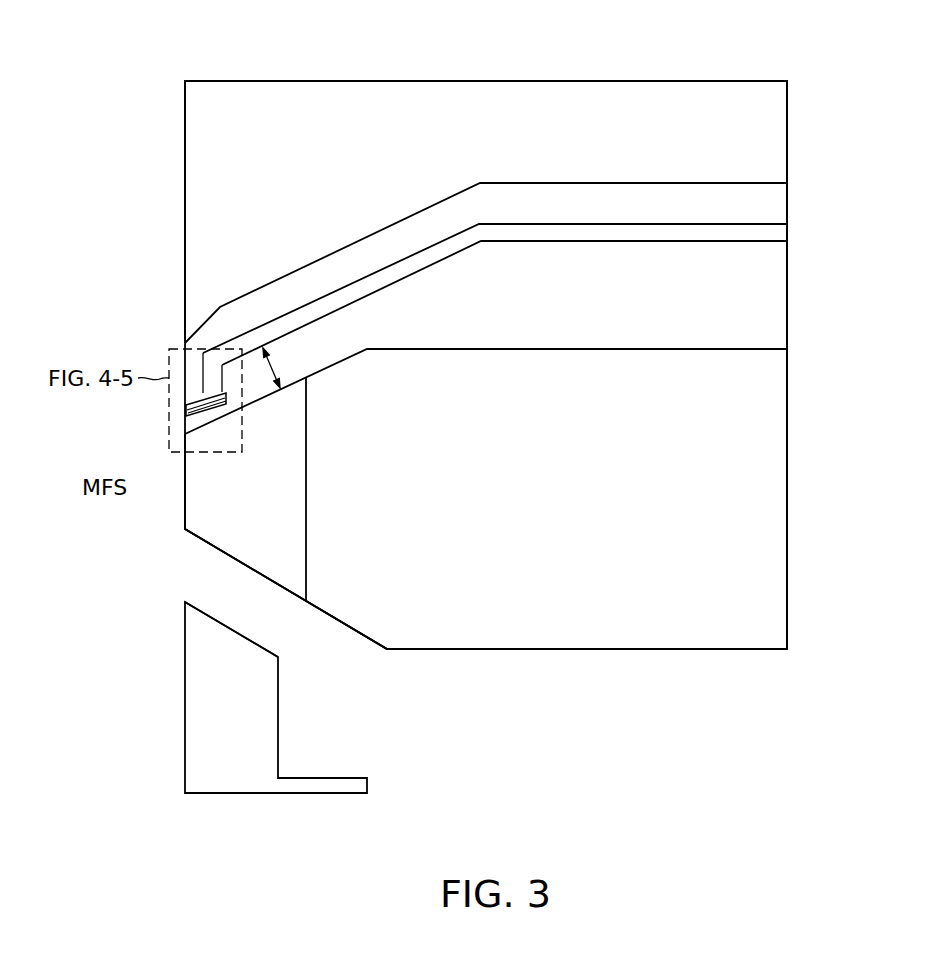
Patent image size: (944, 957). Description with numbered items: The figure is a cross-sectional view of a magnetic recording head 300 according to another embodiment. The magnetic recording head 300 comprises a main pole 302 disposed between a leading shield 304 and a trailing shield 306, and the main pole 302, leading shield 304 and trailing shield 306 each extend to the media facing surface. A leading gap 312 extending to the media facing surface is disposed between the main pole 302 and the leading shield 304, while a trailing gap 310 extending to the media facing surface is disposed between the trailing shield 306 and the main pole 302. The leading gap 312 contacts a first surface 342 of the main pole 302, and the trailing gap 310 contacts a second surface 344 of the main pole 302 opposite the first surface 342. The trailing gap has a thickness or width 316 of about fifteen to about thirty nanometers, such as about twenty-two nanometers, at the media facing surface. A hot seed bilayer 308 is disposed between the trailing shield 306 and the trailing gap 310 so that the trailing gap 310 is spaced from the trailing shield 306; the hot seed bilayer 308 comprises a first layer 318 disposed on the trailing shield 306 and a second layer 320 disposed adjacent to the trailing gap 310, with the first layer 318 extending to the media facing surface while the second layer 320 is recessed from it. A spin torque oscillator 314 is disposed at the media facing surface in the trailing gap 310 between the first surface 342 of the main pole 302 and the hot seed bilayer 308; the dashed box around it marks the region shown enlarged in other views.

The magnetic recording head 300 is at (150, 44).
The main pole 302 is at (280, 510).
The leading shield 304 is at (248, 722).
The trailing shield 306 is at (255, 185).
The hot seed bilayer 308 is at (796, 183).
The trailing gap 310 is at (455, 336).
The leading gap 312 is at (263, 616).
The spin torque oscillator 314 is at (187, 414).
The thickness or width 316 is at (272, 368).
The first layer 318 is at (311, 276).
The second layer 320 is at (425, 265).
The first surface 342 is at (327, 617).
The second surface 344 is at (355, 350).